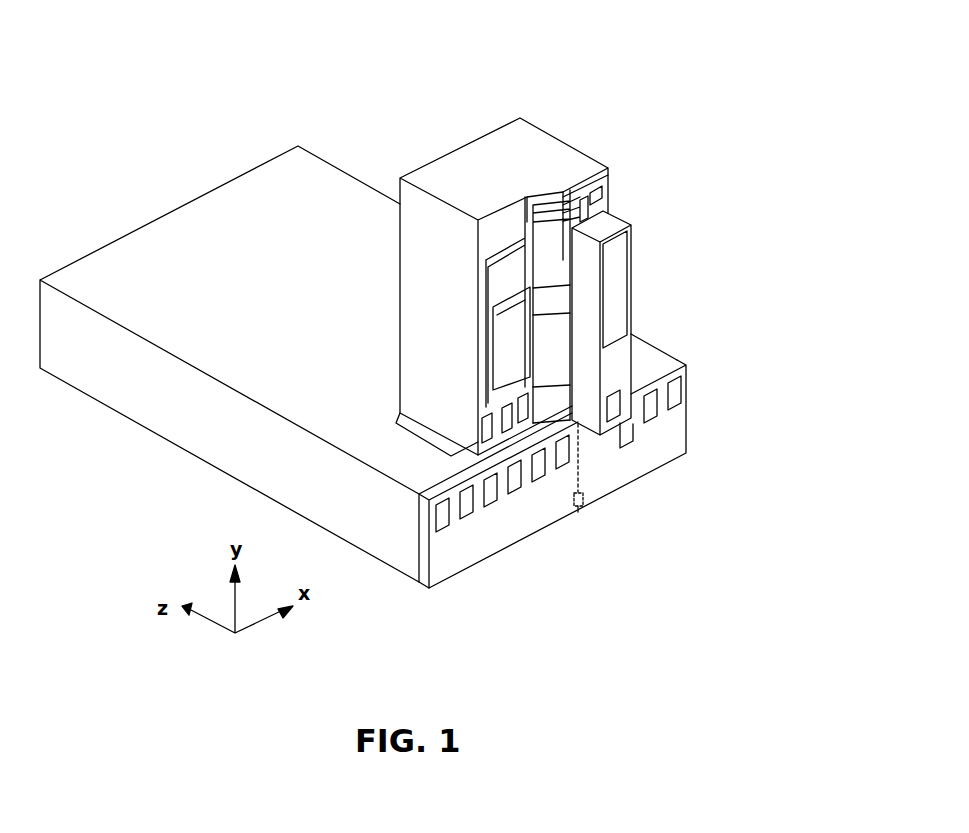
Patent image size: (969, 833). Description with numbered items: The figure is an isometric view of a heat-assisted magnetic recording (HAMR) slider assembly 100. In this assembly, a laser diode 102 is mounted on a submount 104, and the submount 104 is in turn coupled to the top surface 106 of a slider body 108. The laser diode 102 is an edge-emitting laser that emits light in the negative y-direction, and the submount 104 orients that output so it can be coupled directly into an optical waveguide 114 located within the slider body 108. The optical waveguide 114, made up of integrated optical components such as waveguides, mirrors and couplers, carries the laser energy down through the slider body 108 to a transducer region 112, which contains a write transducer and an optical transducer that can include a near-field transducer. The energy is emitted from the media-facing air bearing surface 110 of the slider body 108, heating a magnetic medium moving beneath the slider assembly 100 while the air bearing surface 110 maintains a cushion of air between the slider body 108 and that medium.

The HAMR slider assembly 100 is at (741, 86).
The laser diode 102 is at (607, 224).
The submount 104 is at (568, 158).
The top surface 106 is at (208, 246).
The slider body 108 is at (658, 345).
The media-facing, air bearing surface 110 is at (410, 580).
The transducer region 112 is at (578, 512).
The optical waveguide 114 is at (578, 462).